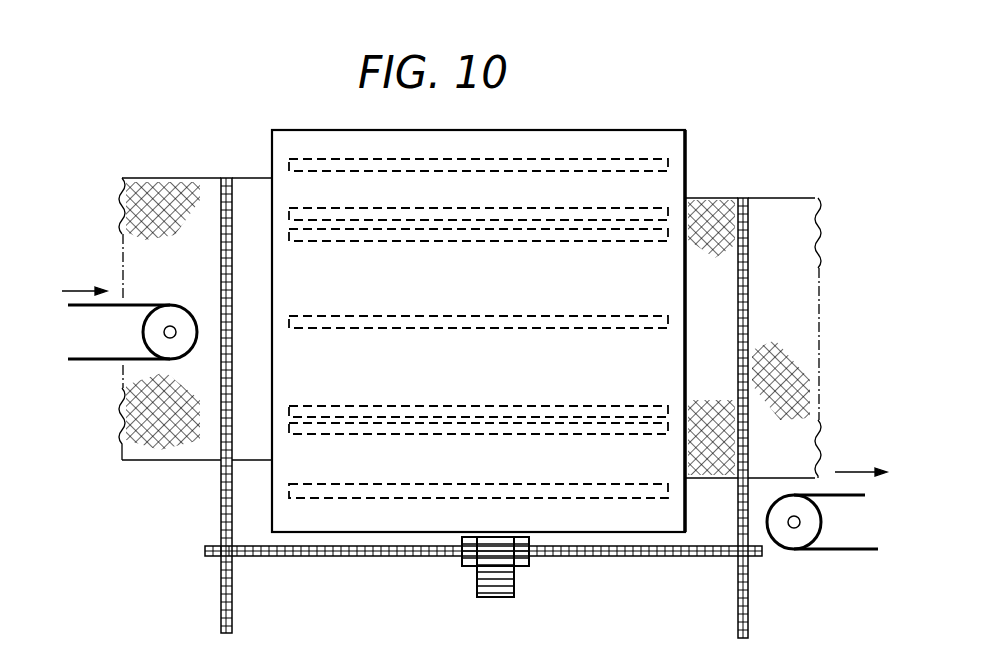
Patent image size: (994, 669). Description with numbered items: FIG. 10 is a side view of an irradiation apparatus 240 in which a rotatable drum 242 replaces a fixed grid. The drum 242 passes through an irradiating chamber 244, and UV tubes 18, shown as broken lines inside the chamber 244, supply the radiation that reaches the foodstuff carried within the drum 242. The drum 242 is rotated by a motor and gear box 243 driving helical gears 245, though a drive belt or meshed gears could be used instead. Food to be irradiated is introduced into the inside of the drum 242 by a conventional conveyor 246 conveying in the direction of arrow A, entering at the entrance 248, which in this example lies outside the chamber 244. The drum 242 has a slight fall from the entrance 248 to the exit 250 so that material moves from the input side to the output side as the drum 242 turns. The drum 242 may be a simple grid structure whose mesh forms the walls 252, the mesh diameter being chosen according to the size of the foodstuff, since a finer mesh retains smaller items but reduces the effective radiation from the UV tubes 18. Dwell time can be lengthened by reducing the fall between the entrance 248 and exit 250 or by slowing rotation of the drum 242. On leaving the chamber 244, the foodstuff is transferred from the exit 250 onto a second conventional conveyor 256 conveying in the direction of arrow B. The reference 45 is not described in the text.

The apparatus 240 is at (298, 130).
The chamber 244 is at (668, 130).
The UV tubes 18 is at (668, 163).
The drum 242 is at (150, 178).
The entrance 248 is at (122, 200).
The walls 252 is at (720, 210).
The exit 250 is at (823, 232).
The conveyor 246 is at (105, 337).
The second conveyor 256 is at (840, 537).
The support rail 45 is at (221, 492).
The helical gears 245 is at (738, 578).
The motor and gear box 243 is at (478, 585).